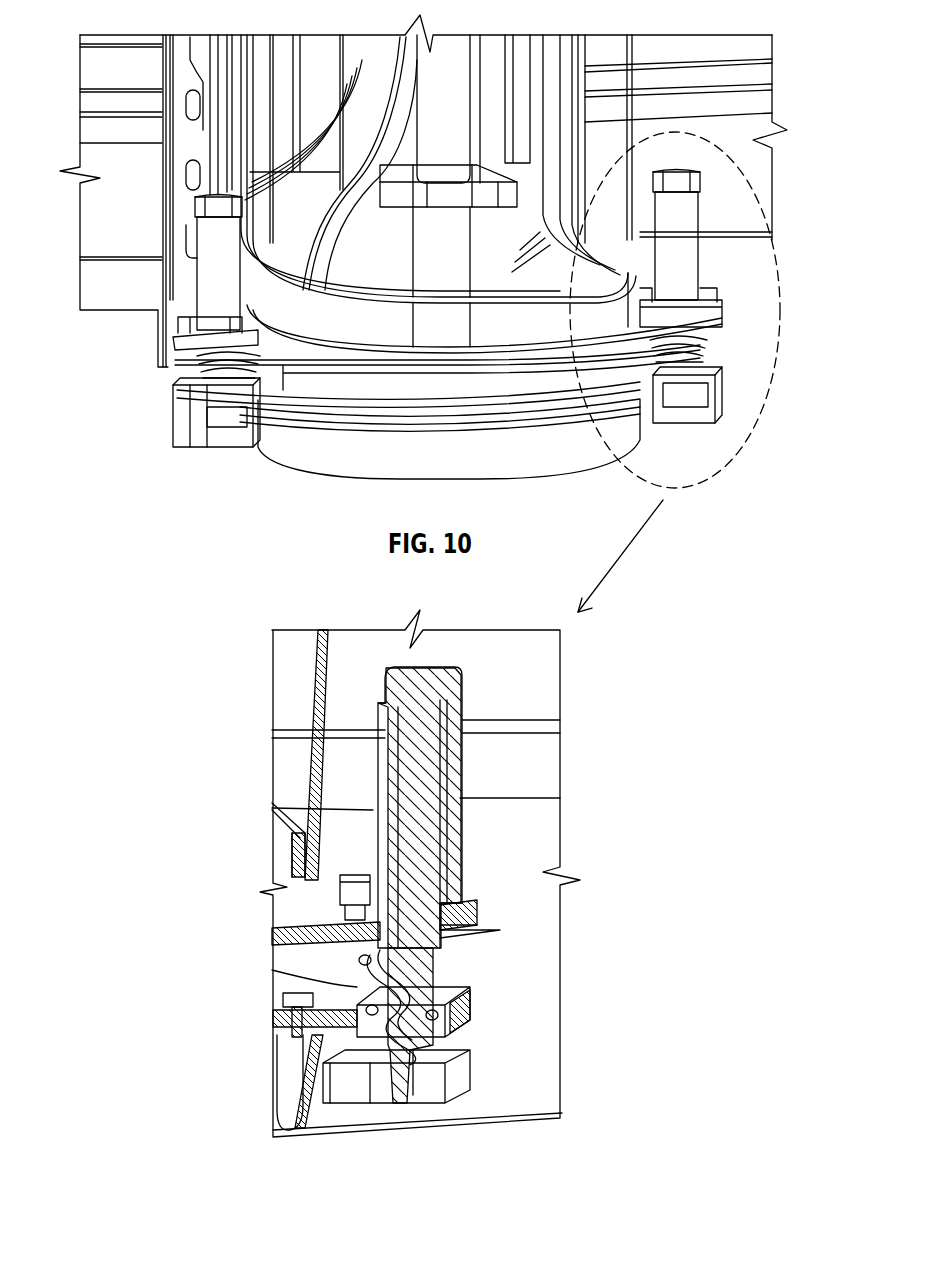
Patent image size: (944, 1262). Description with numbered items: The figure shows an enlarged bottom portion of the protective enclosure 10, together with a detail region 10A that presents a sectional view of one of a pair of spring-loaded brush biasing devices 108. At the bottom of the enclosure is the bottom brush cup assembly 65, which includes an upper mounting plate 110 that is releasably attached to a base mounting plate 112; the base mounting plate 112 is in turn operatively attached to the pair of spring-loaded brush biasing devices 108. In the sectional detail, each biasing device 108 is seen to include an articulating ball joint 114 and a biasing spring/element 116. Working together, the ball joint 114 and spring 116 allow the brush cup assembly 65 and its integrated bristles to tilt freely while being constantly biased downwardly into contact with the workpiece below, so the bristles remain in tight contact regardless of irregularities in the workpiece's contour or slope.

The protective enclosure 10 is at (777, 87).
The detail region of the assembly 10A is at (760, 420).
The bottom brush cup assembly 65 is at (670, 470).
The spring-loaded brush biasing device 108 is at (93, 313).
The upper mounting plate 110 is at (623, 405).
The base mounting plate 112 is at (707, 353).
The articulating ball joint 114 is at (477, 1050).
The biasing spring/element 116 is at (435, 947).